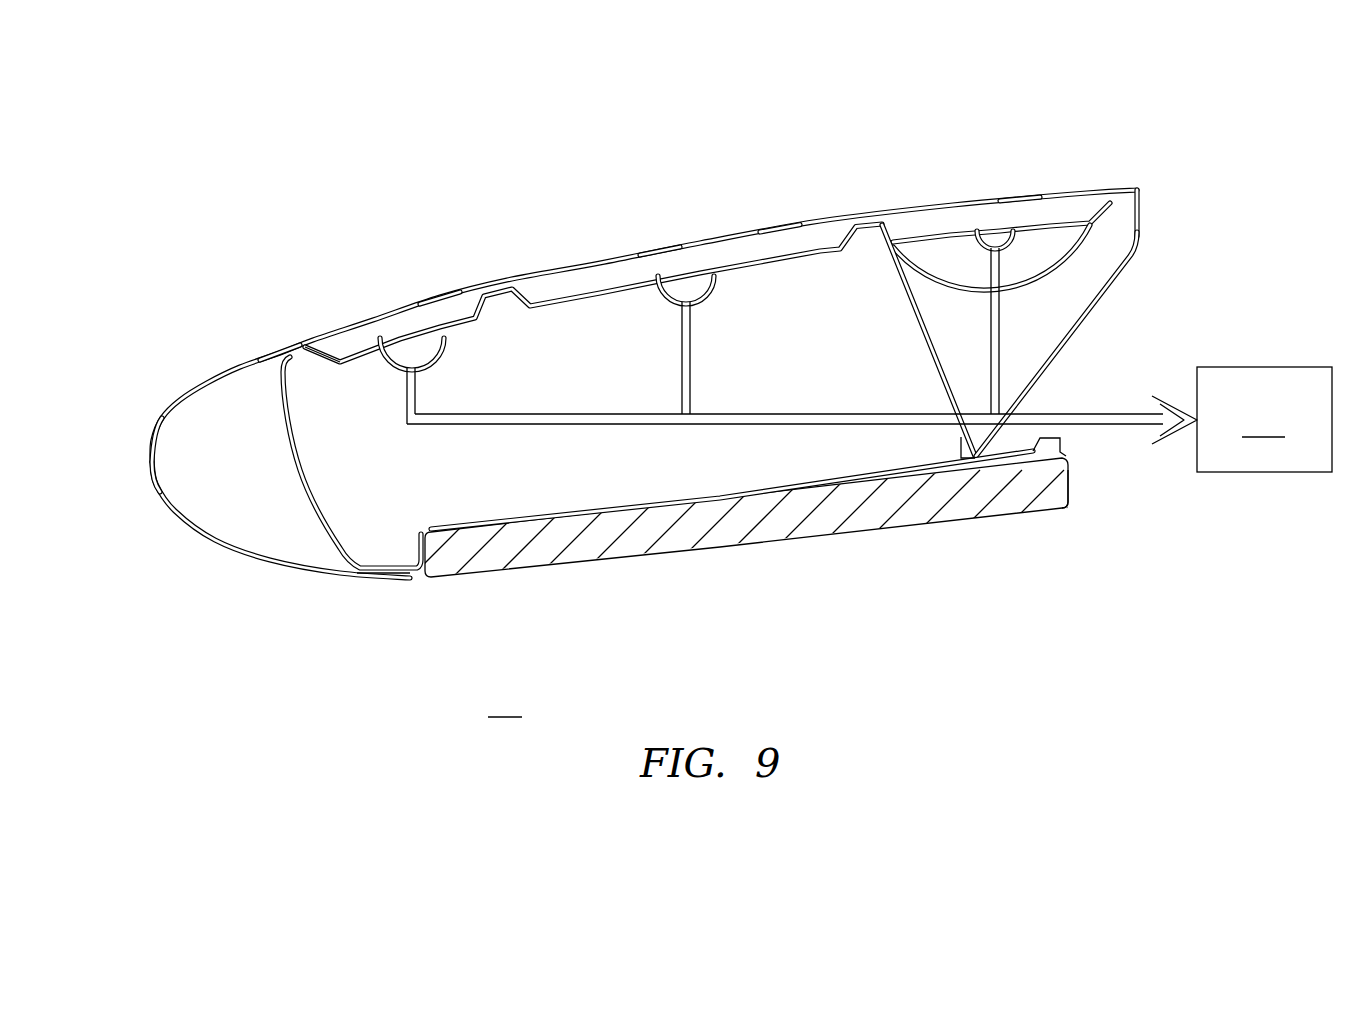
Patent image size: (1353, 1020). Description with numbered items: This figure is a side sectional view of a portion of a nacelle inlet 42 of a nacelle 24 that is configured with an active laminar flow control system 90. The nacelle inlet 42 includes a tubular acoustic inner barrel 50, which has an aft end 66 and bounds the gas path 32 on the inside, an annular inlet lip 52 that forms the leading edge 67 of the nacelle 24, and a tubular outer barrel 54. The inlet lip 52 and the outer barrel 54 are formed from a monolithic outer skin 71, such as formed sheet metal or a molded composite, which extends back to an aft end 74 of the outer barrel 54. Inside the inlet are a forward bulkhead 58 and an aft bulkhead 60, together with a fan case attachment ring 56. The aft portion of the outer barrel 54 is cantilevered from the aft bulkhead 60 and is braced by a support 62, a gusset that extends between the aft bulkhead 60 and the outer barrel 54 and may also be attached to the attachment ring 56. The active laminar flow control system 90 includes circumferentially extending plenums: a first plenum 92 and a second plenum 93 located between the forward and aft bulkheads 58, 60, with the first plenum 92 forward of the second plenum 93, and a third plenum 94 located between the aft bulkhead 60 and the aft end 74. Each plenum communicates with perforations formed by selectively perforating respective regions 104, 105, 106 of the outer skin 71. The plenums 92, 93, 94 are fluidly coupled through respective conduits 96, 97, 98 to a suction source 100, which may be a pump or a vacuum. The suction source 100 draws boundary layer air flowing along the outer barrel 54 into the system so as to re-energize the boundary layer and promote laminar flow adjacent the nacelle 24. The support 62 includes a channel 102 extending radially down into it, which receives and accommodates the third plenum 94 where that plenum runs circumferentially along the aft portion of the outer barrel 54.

The nacelle 24 is at (300, 213).
The gas path 32 is at (505, 702).
The nacelle inlet 42 is at (408, 268).
The acoustic inner barrel 50 is at (565, 565).
The inlet lip 52 is at (262, 565).
The outer barrel 54 is at (658, 252).
The fan case attachment ring 56 is at (1063, 440).
The forward bulkhead 58 is at (316, 500).
The aft bulkhead 60 is at (912, 303).
The support 62 is at (1098, 275).
The aft end of inner barrel 66 is at (1072, 492).
The leading edge 67 is at (146, 463).
The monolithic outer skin 71 is at (548, 273).
The aft end of outer barrel 74 is at (1140, 190).
The active laminar flow control system 90 is at (1185, 335).
The first plenum 92 is at (352, 364).
The second plenum 93 is at (549, 300).
The third plenum 94 is at (1082, 238).
The first conduit 96 is at (418, 385).
The second conduit 97 is at (692, 370).
The third conduit 98 is at (1002, 360).
The suction source 100 is at (1264, 419).
The channel 102 is at (956, 268).
The perforated region 104 is at (440, 300).
The perforated region 105 is at (780, 228).
The perforated region 106 is at (1019, 197).